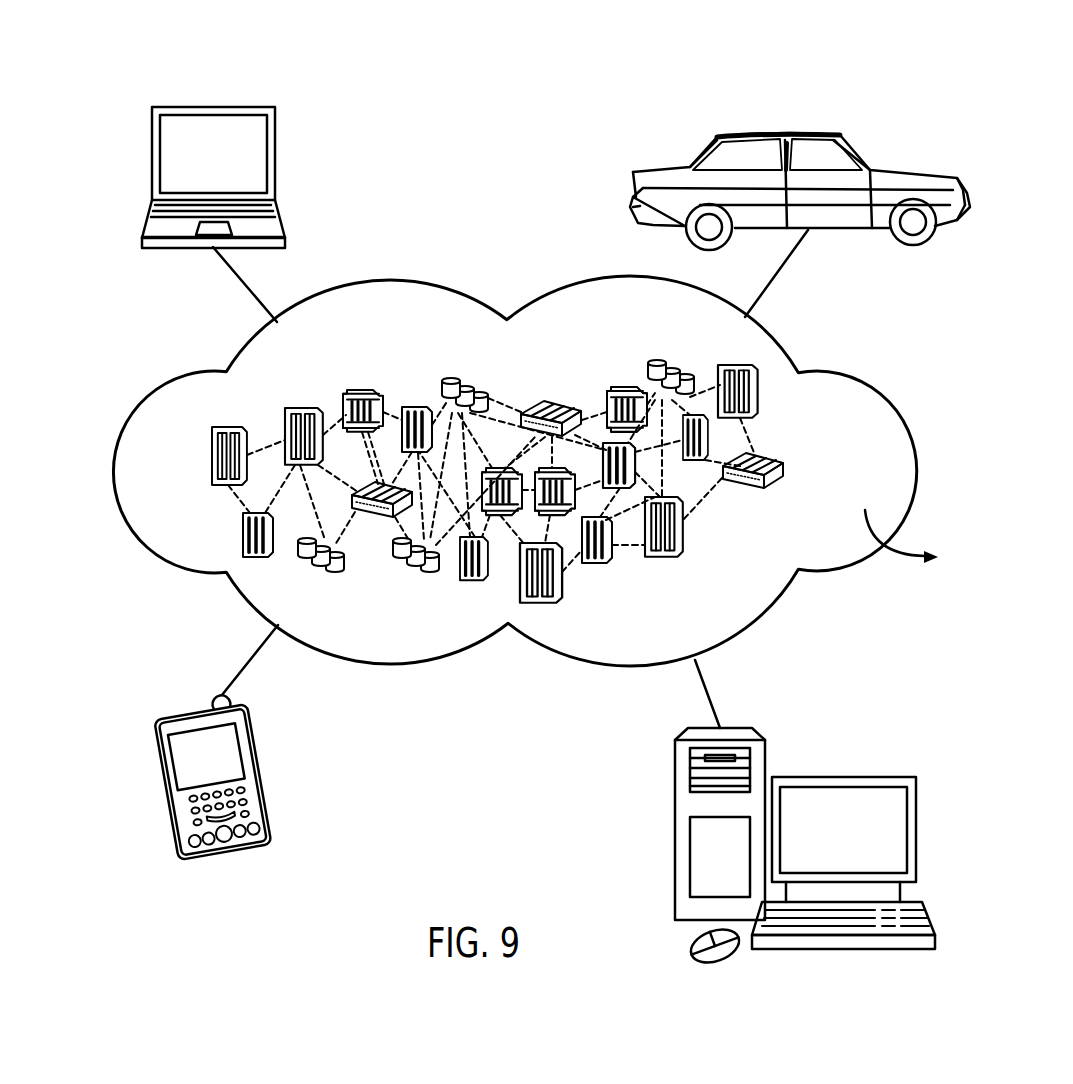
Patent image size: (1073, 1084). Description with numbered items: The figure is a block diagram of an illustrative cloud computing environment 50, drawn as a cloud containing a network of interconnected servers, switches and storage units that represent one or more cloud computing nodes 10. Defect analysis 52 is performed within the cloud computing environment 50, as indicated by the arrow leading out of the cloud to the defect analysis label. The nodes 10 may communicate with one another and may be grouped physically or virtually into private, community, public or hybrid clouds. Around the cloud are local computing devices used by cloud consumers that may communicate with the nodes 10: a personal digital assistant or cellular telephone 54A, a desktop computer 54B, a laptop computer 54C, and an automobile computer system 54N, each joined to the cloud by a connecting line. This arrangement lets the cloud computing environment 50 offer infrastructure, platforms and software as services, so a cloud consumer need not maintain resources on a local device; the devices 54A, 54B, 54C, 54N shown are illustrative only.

The cloud computing nodes 10 is at (800, 475).
The cloud computing environment 50 is at (855, 377).
The defect analysis 52 is at (993, 520).
The personal digital assistant (PDA) or cellular telephone 54A is at (193, 712).
The desktop computer 54B is at (842, 777).
The laptop computer 54C is at (213, 106).
The automobile computer system 54N is at (778, 133).